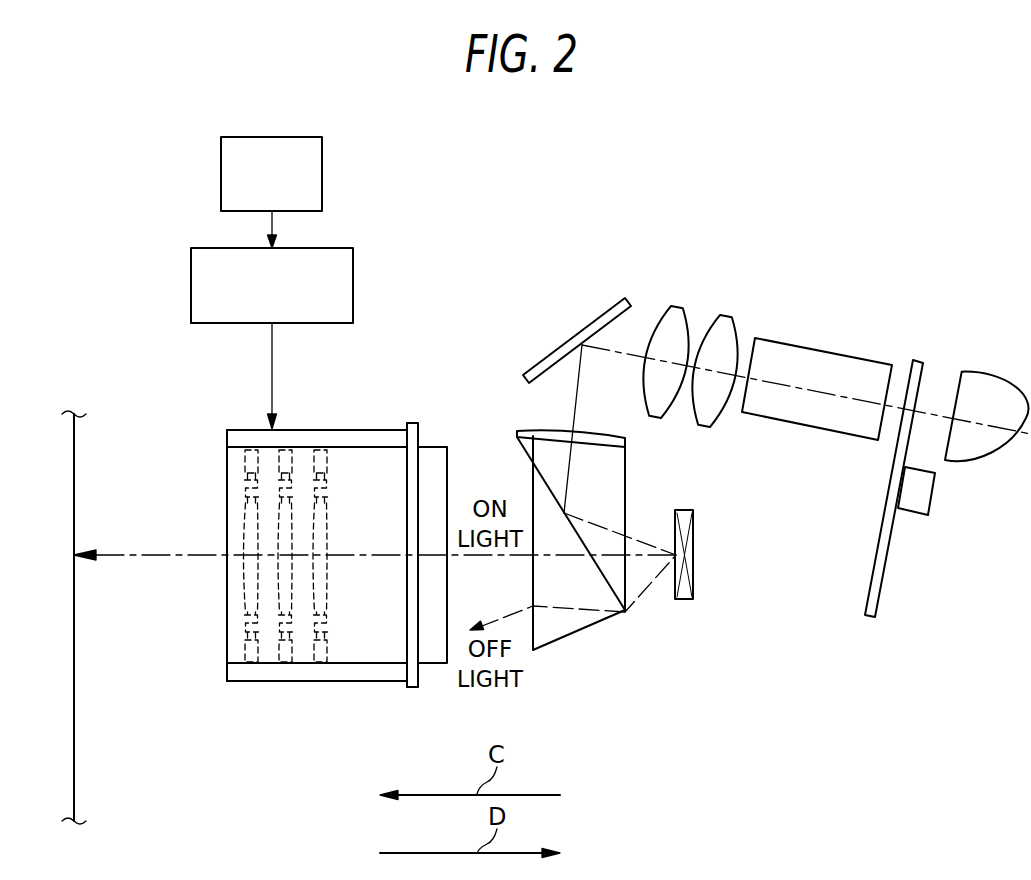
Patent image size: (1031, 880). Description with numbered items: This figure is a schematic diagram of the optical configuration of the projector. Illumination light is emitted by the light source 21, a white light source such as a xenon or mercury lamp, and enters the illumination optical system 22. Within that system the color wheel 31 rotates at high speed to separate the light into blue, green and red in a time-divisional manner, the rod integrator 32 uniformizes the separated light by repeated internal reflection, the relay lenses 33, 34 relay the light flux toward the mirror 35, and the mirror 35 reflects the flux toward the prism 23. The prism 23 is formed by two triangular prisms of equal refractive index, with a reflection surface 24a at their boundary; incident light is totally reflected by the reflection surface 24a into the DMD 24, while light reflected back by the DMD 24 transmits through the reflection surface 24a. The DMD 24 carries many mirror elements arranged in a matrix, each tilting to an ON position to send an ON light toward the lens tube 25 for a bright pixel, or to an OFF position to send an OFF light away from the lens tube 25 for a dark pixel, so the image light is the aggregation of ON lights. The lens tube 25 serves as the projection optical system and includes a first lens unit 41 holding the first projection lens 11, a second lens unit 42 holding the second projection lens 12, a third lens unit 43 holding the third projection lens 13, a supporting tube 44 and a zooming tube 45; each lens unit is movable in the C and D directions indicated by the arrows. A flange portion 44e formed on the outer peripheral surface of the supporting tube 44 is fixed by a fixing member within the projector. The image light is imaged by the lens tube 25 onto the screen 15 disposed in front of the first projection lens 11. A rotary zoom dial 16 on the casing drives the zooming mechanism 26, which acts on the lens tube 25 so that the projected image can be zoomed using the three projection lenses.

The zoom dial 16 is at (322, 173).
The zooming mechanism 26 is at (353, 284).
The screen 15 is at (74, 801).
The lens tube 25 is at (327, 422).
The supporting tube 44 is at (236, 445).
The zooming tube 45 is at (378, 428).
The flange portion 44e is at (412, 688).
The first lens unit 41 is at (234, 484).
The second lens unit 42 is at (291, 440).
The third lens unit 43 is at (336, 526).
The first projection lens 11 is at (240, 593).
The second projection lens 12 is at (278, 593).
The third projection lens 13 is at (313, 593).
The prism 23 is at (630, 475).
The reflection surface 24a is at (533, 427).
The DMD 24 is at (683, 600).
The illumination optical system 22 is at (943, 258).
The mirror 35 is at (622, 298).
The relay lens 34 is at (673, 305).
The relay lens 33 is at (722, 315).
The rod integrator 32 is at (825, 352).
The color wheel 31 is at (915, 360).
The light source 21 is at (993, 377).